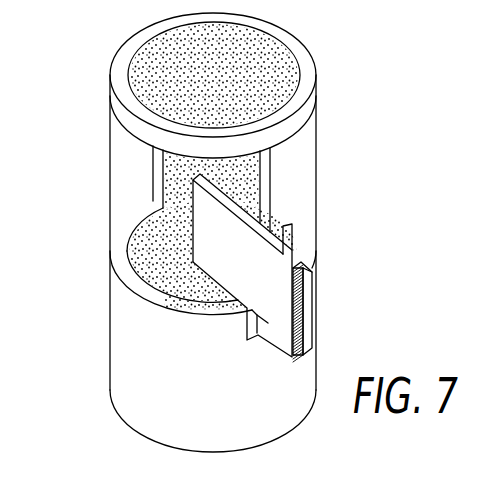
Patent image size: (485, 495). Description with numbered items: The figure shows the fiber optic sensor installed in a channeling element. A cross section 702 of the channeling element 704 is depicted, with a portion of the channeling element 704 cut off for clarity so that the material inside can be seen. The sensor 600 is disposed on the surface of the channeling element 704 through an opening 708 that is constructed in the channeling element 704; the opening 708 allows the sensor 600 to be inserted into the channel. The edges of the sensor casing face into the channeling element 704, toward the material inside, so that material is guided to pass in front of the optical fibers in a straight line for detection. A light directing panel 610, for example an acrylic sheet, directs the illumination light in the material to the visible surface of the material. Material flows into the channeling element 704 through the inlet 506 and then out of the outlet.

The inlet 506 is at (271, 57).
The channeling element 704 is at (316, 152).
The cross section 702 is at (98, 113).
The opening 708 is at (285, 230).
The sensor 600 is at (292, 249).
The light directing panel 610 is at (303, 305).